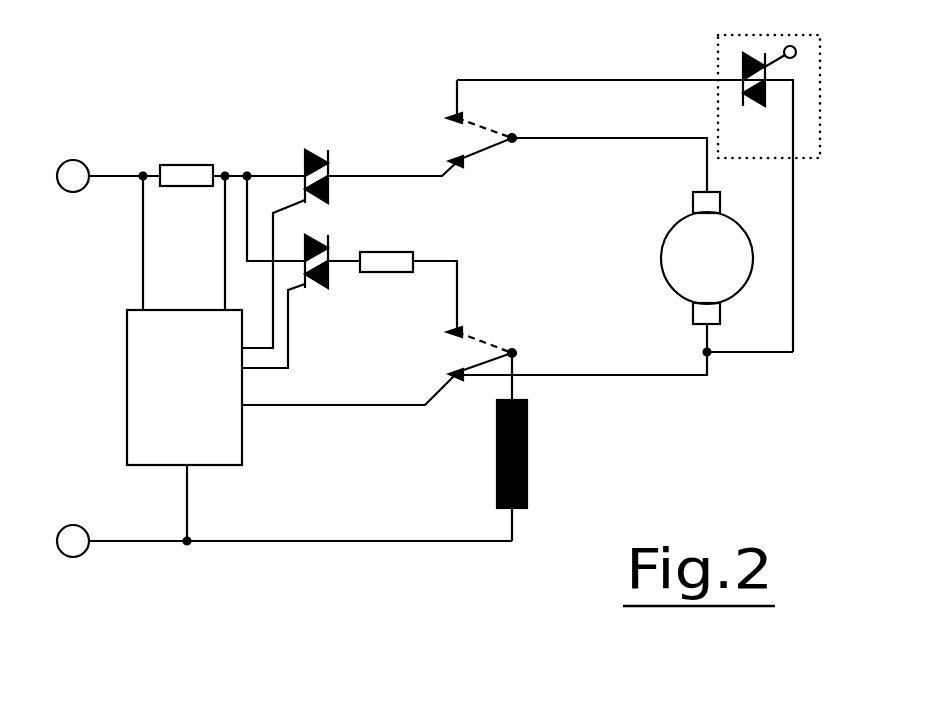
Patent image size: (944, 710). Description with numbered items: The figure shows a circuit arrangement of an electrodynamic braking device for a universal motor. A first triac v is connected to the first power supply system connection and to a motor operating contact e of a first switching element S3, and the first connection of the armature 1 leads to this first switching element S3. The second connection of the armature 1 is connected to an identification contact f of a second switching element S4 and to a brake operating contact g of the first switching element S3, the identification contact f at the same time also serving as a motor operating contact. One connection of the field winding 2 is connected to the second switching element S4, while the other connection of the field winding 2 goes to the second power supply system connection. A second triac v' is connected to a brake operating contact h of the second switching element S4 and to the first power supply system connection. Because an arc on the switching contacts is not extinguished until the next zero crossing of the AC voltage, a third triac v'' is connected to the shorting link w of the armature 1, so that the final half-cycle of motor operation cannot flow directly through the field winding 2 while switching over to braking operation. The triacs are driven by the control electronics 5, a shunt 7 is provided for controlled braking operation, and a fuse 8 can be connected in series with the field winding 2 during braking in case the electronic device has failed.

The armature 1 is at (658, 245).
The field winding 2 is at (527, 457).
The control electronics 5 is at (193, 404).
The shunt 7 is at (178, 188).
The fuse 8 is at (388, 275).
The first triac v is at (293, 229).
The second triac v' is at (285, 301).
The third triac v'' is at (769, 96).
The first switching element S3 is at (512, 138).
The second switching element S4 is at (512, 353).
The motor operating contact e is at (462, 163).
The identification contact f is at (458, 377).
The brake operating contact g is at (462, 118).
The brake operating contact h is at (463, 332).
The shorting link w is at (793, 205).